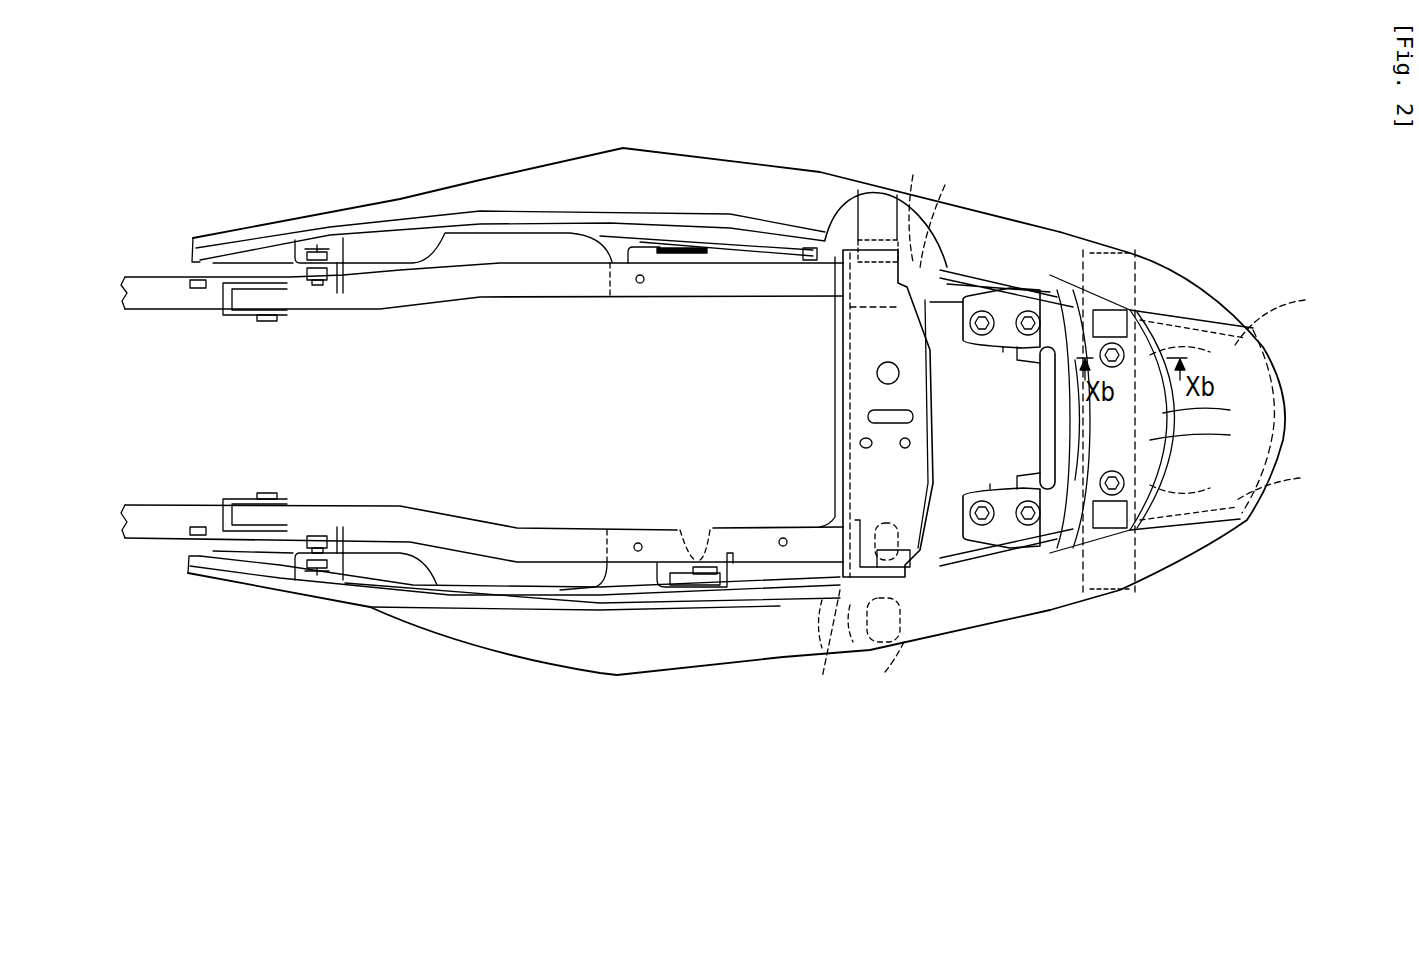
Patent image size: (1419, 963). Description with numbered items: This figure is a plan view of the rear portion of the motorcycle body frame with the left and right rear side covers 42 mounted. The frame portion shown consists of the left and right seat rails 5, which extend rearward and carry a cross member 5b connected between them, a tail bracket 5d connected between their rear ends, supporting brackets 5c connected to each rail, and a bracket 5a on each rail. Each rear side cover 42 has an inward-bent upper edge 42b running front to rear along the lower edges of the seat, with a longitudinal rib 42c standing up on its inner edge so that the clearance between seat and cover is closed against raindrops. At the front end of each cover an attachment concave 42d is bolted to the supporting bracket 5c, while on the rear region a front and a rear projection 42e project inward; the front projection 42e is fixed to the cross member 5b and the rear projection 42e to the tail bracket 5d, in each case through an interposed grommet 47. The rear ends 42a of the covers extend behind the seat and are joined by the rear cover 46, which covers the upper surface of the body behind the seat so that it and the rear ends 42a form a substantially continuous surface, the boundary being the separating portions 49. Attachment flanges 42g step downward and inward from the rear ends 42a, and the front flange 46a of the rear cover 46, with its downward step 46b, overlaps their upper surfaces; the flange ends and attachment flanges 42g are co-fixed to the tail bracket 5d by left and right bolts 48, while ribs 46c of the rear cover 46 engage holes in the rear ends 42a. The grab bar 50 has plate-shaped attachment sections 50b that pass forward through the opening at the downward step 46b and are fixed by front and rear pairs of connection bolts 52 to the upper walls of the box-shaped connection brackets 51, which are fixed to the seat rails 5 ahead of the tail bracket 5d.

The seat rail 5 is at (533, 302).
The rail bracket 5a is at (248, 322).
The cross member 5b is at (845, 355).
The supporting bracket 5c is at (335, 296).
The tail bracket 5d is at (1088, 419).
The rear side cover 42 is at (810, 166).
The rear end 42a is at (1173, 266).
The upper edge 42b is at (738, 230).
The longitudinal rib 42c is at (700, 233).
The attachment concave 42d is at (330, 247).
The projection 42e is at (1182, 455).
The attachment flange 42g is at (1190, 350).
The rear cover 46 is at (1278, 371).
The front flange 46a is at (1218, 405).
The downward step 46b is at (1211, 432).
The rib 46c is at (1290, 391).
The grommet 47 is at (997, 424).
The bolt 48 is at (1175, 476).
The separating portion 49 is at (1180, 312).
The grab bar 50 is at (1003, 548).
The attachment section 50b is at (1003, 349).
The connection bracket 51 is at (1030, 368).
The connection bolt 52 is at (985, 311).